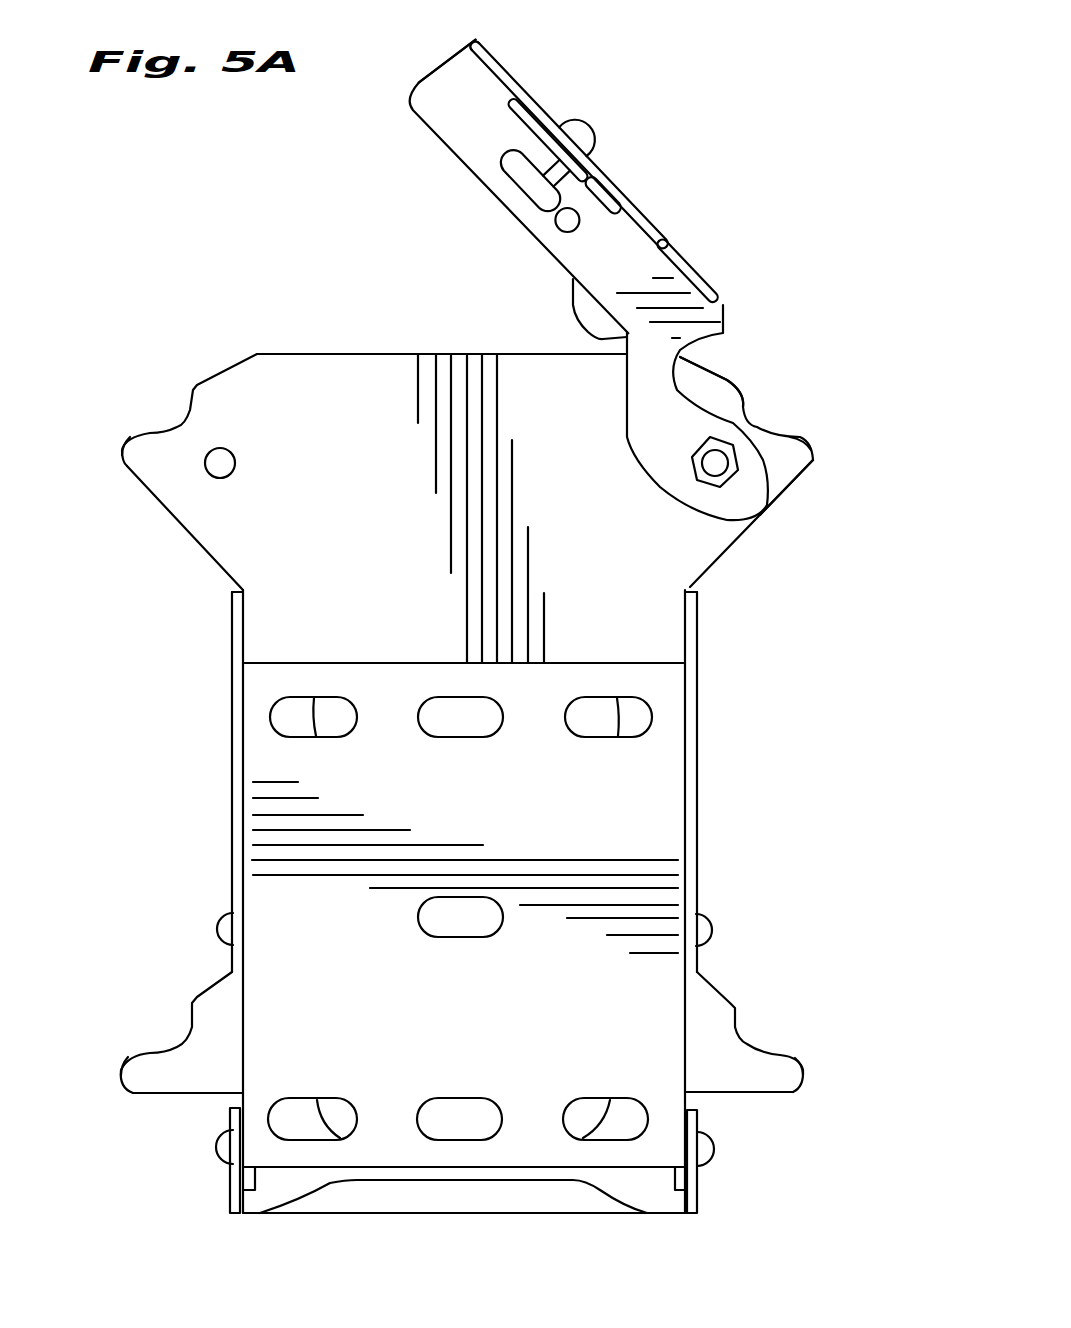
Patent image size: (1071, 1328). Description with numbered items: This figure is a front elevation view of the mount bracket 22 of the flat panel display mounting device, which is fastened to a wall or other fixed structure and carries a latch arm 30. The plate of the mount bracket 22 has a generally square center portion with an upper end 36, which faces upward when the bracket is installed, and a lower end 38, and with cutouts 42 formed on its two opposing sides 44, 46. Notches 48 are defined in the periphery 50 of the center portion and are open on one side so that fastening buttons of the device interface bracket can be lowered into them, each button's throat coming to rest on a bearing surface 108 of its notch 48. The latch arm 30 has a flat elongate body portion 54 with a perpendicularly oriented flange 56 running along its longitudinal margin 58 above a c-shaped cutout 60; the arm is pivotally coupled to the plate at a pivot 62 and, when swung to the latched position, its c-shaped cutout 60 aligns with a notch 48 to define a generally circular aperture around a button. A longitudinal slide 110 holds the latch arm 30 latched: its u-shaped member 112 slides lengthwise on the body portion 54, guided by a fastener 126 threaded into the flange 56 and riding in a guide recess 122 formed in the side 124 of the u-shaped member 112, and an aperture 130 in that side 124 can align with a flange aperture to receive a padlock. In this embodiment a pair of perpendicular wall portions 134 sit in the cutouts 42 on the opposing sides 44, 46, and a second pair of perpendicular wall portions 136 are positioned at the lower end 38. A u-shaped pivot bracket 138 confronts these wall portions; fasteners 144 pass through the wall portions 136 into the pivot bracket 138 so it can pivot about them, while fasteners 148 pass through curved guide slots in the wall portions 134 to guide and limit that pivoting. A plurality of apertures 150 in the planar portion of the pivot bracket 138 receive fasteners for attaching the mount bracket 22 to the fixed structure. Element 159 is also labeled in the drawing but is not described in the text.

The mount bracket 22 is at (270, 312).
The latch arm 30 is at (643, 233).
The upper end 36 is at (387, 375).
The lower end 38 is at (277, 1198).
The cutouts 42 is at (142, 614).
The opposing side 44 is at (236, 740).
The opposing side 46 is at (697, 692).
The notches 48 is at (150, 432).
The periphery 50 is at (815, 462).
The elongate body portion 54 is at (728, 330).
The perpendicularly oriented flange 56 is at (515, 108).
The longitudinal margin 58 is at (695, 276).
The c-shaped cutout 60 is at (725, 382).
The pivot 62 is at (727, 472).
The bearing surface 108 is at (133, 437).
The longitudinal slide 110 is at (612, 178).
The u-shaped member 112 is at (517, 84).
The guide recess 122 is at (540, 114).
The side 124 is at (507, 66).
The fastener 126 is at (578, 136).
The aperture 130 is at (500, 67).
The perpendicular wall portions 134 is at (240, 840).
The perpendicular wall portions 136 is at (232, 1192).
The u-shaped pivot bracket 138 is at (464, 915).
The fasteners 144 is at (218, 1145).
The fasteners 148 is at (218, 928).
The apertures 150 is at (563, 1112).
The slot tab 159 is at (268, 712).